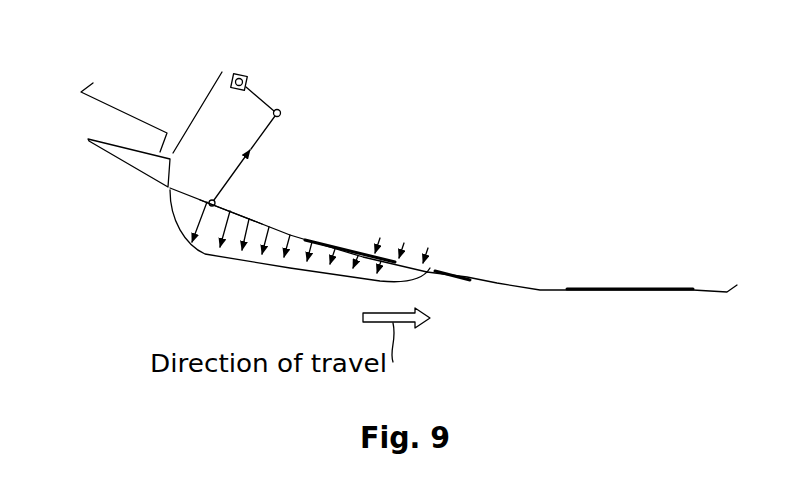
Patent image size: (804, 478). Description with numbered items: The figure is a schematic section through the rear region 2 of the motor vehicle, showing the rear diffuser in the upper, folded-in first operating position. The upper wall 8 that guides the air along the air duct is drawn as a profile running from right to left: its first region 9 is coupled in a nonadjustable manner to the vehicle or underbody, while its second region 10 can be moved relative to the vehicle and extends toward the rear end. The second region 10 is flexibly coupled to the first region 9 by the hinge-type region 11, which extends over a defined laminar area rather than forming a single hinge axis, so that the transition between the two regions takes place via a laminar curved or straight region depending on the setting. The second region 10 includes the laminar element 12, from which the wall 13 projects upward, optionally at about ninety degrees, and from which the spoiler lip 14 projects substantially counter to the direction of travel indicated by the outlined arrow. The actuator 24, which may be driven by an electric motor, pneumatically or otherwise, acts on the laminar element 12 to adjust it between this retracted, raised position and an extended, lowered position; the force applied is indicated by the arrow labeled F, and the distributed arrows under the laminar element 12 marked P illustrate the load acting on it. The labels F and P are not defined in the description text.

The rear region 2 is at (92, 82).
The spoiler lip 14 is at (120, 158).
The wall 13 is at (187, 115).
The actuator 24 is at (240, 77).
The force F is at (226, 180).
The second region 10 is at (293, 233).
The laminar element 12 is at (231, 213).
The hinge-type region 11 is at (427, 262).
The pressure distribution P is at (293, 270).
The first region 9 is at (533, 289).
The upper wall 8 is at (636, 288).